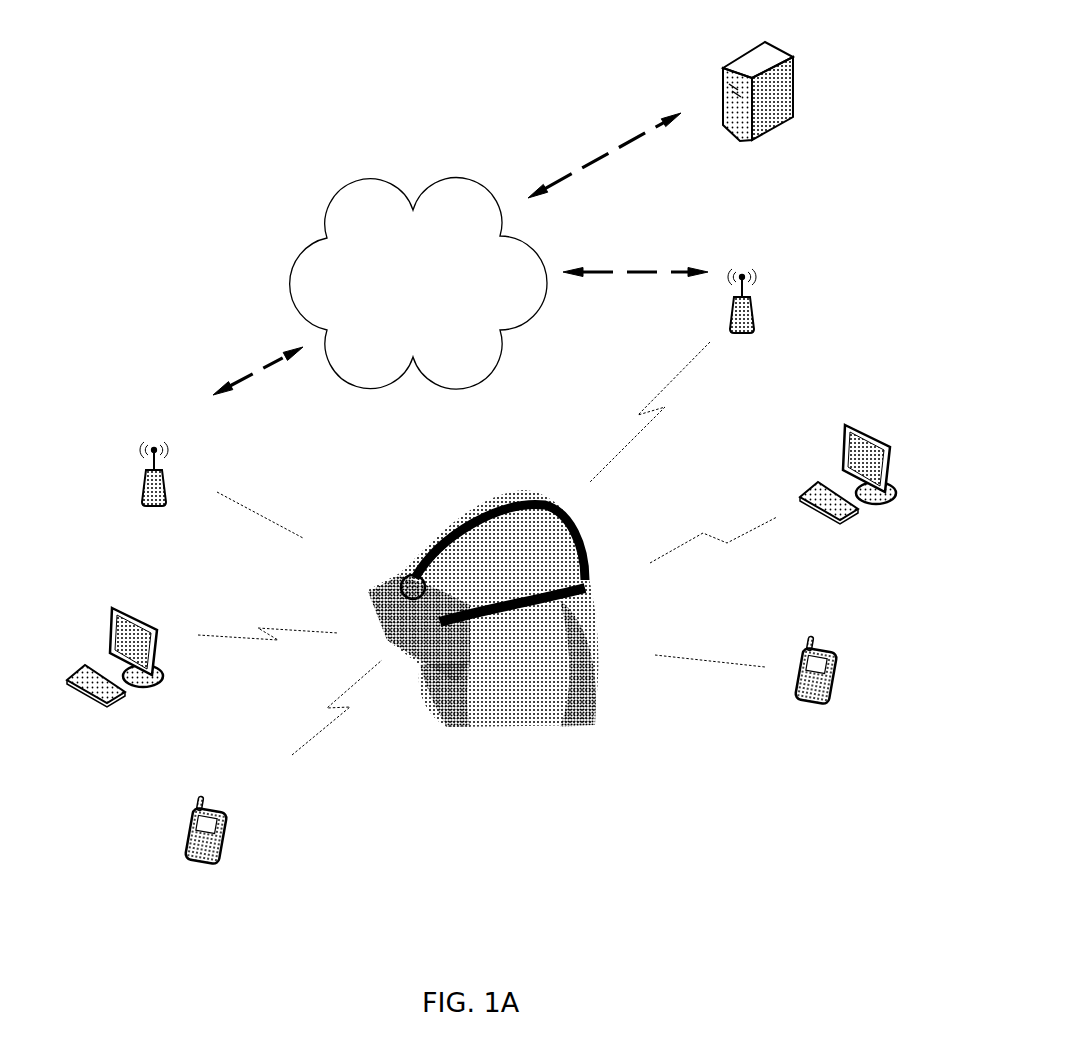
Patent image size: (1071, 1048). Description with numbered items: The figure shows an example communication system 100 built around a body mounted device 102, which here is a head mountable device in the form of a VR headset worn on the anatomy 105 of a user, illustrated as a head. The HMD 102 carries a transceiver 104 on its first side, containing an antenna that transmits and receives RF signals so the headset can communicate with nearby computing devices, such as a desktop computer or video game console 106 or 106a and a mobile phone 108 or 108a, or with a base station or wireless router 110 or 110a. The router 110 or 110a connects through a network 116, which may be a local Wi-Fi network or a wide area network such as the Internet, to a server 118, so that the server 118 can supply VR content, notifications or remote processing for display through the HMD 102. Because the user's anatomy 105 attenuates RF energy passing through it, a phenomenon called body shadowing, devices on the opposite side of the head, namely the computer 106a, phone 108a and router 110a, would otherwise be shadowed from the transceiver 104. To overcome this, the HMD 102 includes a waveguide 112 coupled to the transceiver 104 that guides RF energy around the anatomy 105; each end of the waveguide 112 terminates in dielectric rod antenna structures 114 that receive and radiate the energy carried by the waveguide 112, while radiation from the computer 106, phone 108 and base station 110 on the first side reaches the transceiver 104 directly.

The system 100 is at (668, 823).
The body mounted device 102 is at (452, 617).
The transceiver 104 is at (476, 565).
The anatomy 105 is at (517, 543).
The desktop computer 106 is at (112, 610).
The desktop computer 106a is at (847, 427).
The mobile phone 108 is at (229, 814).
The mobile phone 108a is at (841, 653).
The base station 110 is at (164, 484).
The wireless router 110a is at (750, 310).
The waveguide 112 is at (528, 635).
The dielectric rod antenna structures 114 is at (568, 597).
The network 116 is at (344, 206).
The server 118 is at (737, 63).